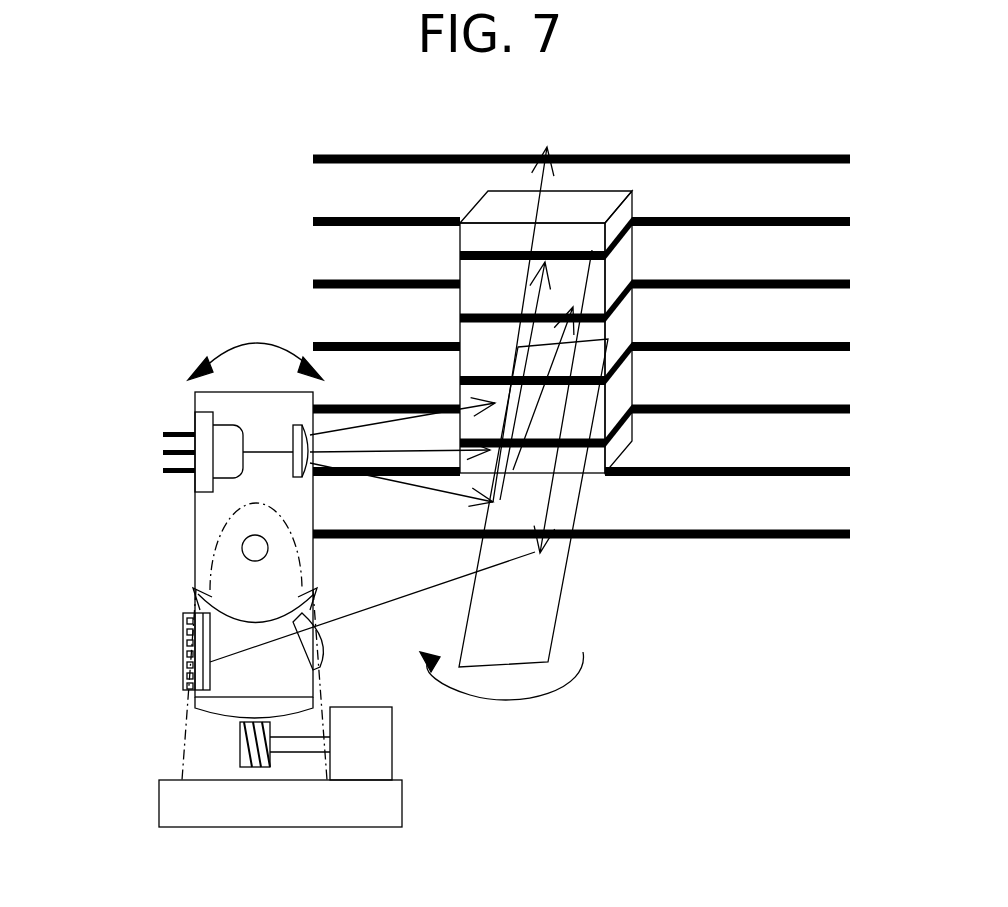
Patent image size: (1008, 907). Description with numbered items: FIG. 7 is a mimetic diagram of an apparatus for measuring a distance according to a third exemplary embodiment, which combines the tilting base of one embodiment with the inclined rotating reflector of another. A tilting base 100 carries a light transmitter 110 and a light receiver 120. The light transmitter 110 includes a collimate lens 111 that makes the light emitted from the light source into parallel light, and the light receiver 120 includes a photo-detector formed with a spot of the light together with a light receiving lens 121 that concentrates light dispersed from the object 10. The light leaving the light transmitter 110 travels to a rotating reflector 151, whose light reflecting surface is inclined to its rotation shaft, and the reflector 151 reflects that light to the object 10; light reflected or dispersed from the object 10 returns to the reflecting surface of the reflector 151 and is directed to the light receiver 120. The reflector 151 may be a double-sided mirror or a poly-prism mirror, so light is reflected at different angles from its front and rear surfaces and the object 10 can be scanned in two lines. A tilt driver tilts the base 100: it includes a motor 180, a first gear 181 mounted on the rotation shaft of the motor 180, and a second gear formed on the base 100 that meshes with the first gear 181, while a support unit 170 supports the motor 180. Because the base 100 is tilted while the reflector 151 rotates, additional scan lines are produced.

The object 10 is at (603, 203).
The base 100 is at (257, 397).
The light transmitter 110 is at (223, 470).
The collimate lens 111 is at (307, 467).
The light receiver 120 is at (193, 653).
The light receiving lens 121 is at (320, 650).
The reflector 151 is at (552, 600).
The support unit 170 is at (400, 810).
The motor 180 is at (358, 772).
The first gear 181 is at (250, 767).